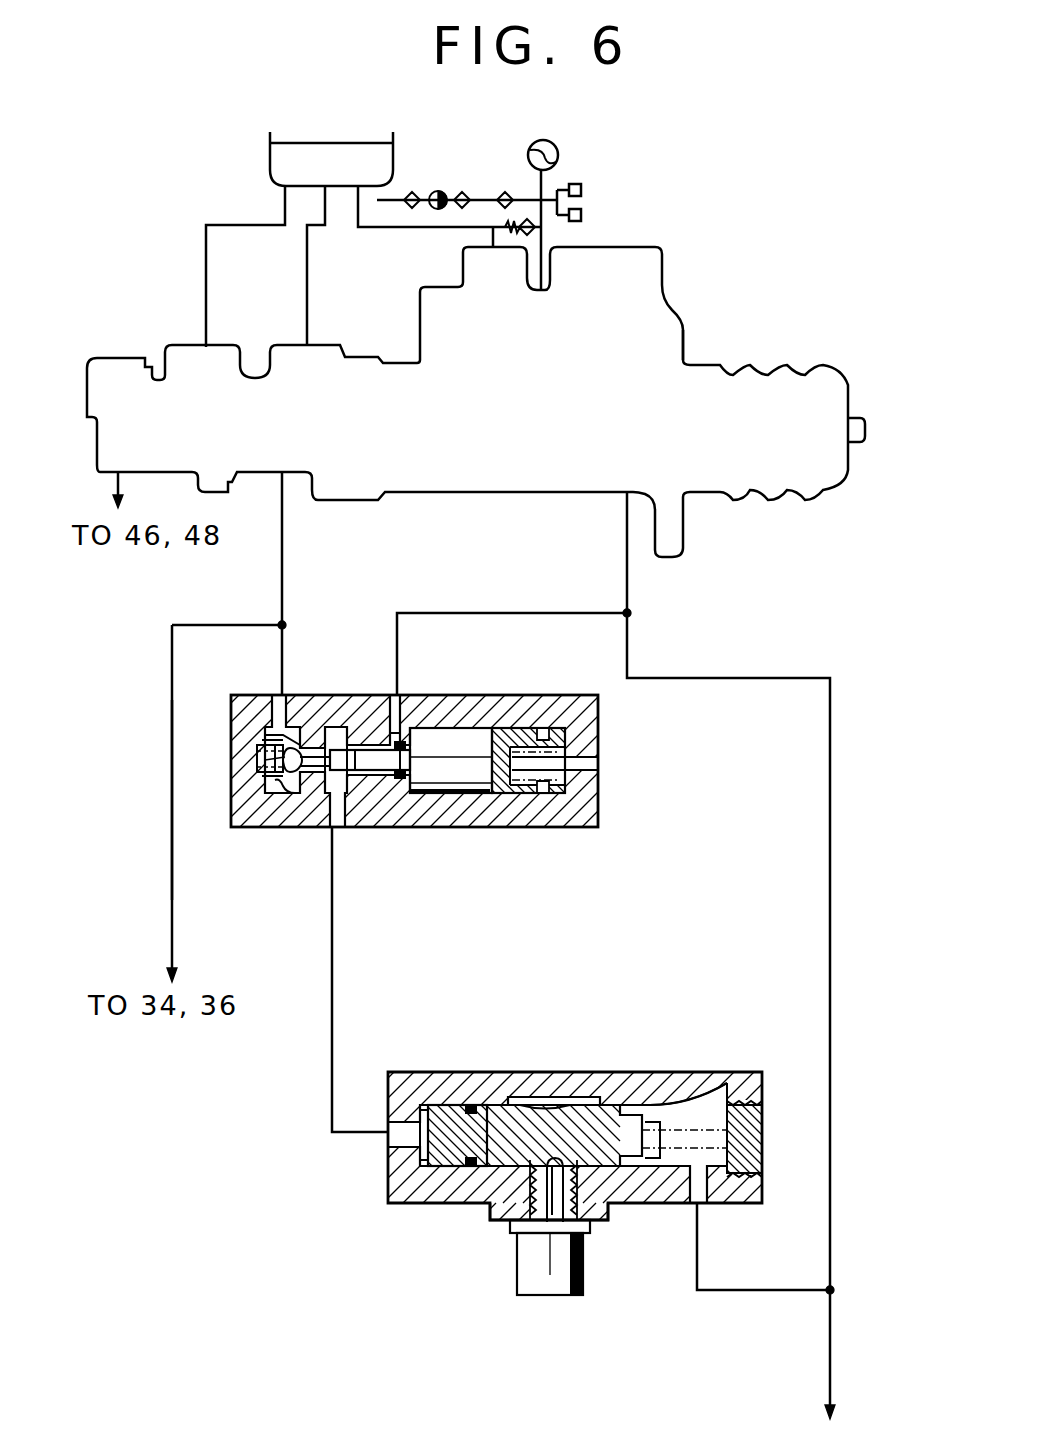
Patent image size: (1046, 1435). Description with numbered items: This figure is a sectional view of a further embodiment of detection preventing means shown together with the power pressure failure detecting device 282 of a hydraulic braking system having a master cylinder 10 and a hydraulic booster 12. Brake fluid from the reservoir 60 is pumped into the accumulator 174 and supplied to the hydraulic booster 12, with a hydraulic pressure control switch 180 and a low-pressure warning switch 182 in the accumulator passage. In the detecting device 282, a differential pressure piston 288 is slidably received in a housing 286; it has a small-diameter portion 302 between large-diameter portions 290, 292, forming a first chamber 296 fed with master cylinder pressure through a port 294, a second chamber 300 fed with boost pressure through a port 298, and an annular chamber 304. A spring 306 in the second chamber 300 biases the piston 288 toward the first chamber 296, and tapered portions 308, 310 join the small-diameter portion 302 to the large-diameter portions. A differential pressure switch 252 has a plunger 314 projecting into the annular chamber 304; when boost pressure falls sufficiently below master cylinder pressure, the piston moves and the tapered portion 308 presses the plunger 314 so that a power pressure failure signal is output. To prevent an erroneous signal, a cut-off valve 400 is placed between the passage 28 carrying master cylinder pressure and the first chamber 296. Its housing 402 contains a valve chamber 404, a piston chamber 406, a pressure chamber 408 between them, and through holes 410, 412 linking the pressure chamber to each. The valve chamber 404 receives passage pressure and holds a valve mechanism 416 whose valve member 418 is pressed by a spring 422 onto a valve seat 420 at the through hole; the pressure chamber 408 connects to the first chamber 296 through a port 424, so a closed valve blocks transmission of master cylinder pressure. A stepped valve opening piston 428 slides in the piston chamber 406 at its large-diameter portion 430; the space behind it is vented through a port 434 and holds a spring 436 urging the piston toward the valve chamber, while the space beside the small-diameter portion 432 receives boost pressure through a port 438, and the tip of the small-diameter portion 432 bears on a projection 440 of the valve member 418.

The master cylinder 10 is at (123, 363).
The hydraulic booster 12 is at (683, 322).
The passage 28 is at (172, 800).
The reservoir 60 is at (268, 171).
The accumulator 174 is at (556, 145).
The hydraulic pressure control switch 180 is at (583, 190).
The low-pressure warning switch 182 is at (583, 215).
The power pressure failure detecting device 282 is at (570, 1167).
The housing 286 is at (680, 1083).
The differential pressure piston 288 is at (635, 1073).
The large-diameter portion 290 is at (448, 1110).
The large-diameter portion 292 is at (728, 1100).
The port 294 is at (400, 1133).
The first chamber 296 is at (423, 1127).
The port 298 is at (700, 1200).
The second chamber 300 is at (712, 1163).
The small-diameter portion 302 is at (563, 1128).
The annular chamber 304 is at (545, 1103).
The spring 306 is at (720, 1132).
The tapered portion 308 is at (475, 1203).
The tapered portion 310 is at (612, 1208).
The plunger 314 is at (542, 1237).
The differential pressure switch 252 is at (547, 1285).
The cut-off valve 400 is at (404, 745).
The housing 402 is at (598, 718).
The valve chamber 404 is at (267, 782).
The piston chamber 406 is at (481, 733).
The pressure chamber 408 is at (320, 737).
The through hole 410 is at (325, 752).
The through hole 412 is at (372, 743).
The valve mechanism 416 is at (300, 785).
The valve member 418 is at (262, 745).
The valve seat 420 is at (277, 790).
The spring 422 is at (257, 752).
The port 424 is at (343, 813).
The valve opening piston 428 is at (460, 800).
The large-diameter portion 430 is at (497, 795).
The small-diameter portion 432 is at (401, 778).
The port 434 is at (588, 767).
The spring 436 is at (567, 753).
The port 438 is at (414, 697).
The projection 440 is at (300, 793).